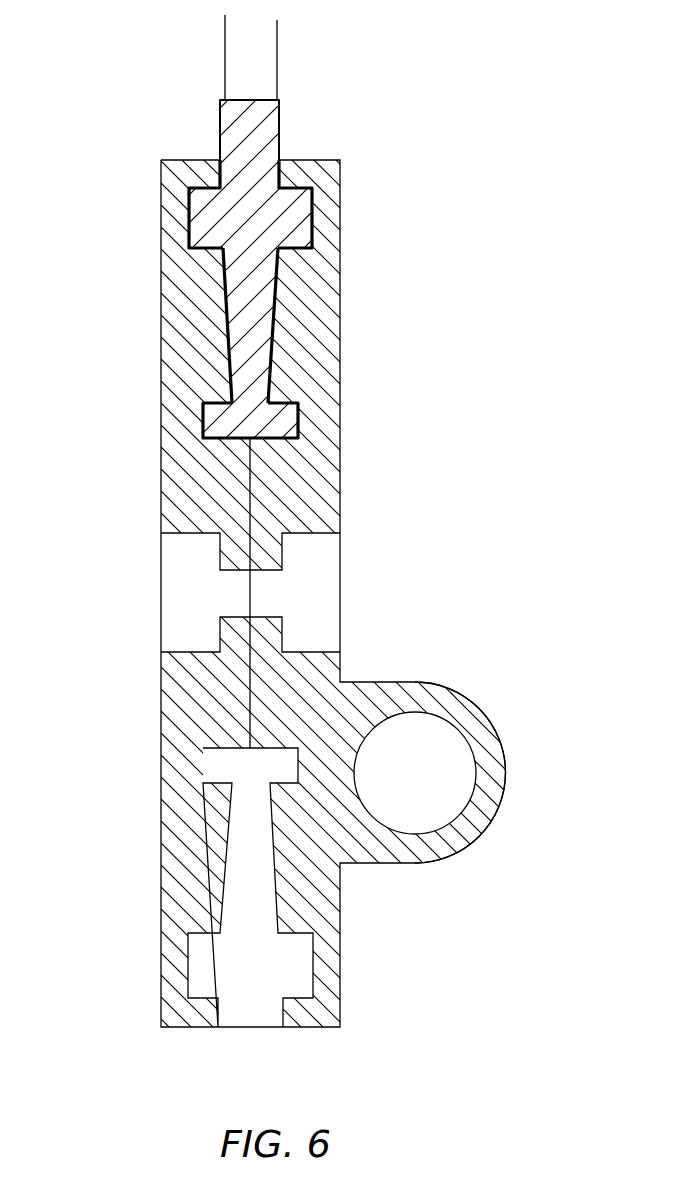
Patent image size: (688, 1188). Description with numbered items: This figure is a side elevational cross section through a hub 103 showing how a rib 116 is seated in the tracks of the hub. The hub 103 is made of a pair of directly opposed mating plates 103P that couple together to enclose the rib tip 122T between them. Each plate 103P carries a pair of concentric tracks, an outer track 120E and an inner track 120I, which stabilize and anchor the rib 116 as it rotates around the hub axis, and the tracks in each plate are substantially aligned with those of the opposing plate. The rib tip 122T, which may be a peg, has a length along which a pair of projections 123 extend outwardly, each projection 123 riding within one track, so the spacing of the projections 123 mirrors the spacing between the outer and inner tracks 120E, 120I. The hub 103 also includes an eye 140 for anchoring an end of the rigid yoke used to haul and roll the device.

The hub 103 is at (299, 521).
The mating plate 103P is at (341, 333).
The rib 116 is at (225, 58).
The rib tip 122T is at (273, 121).
The projection 123 is at (297, 220).
The outer track 120E is at (313, 225).
The inner track 120I is at (298, 436).
The eye 140 is at (463, 707).